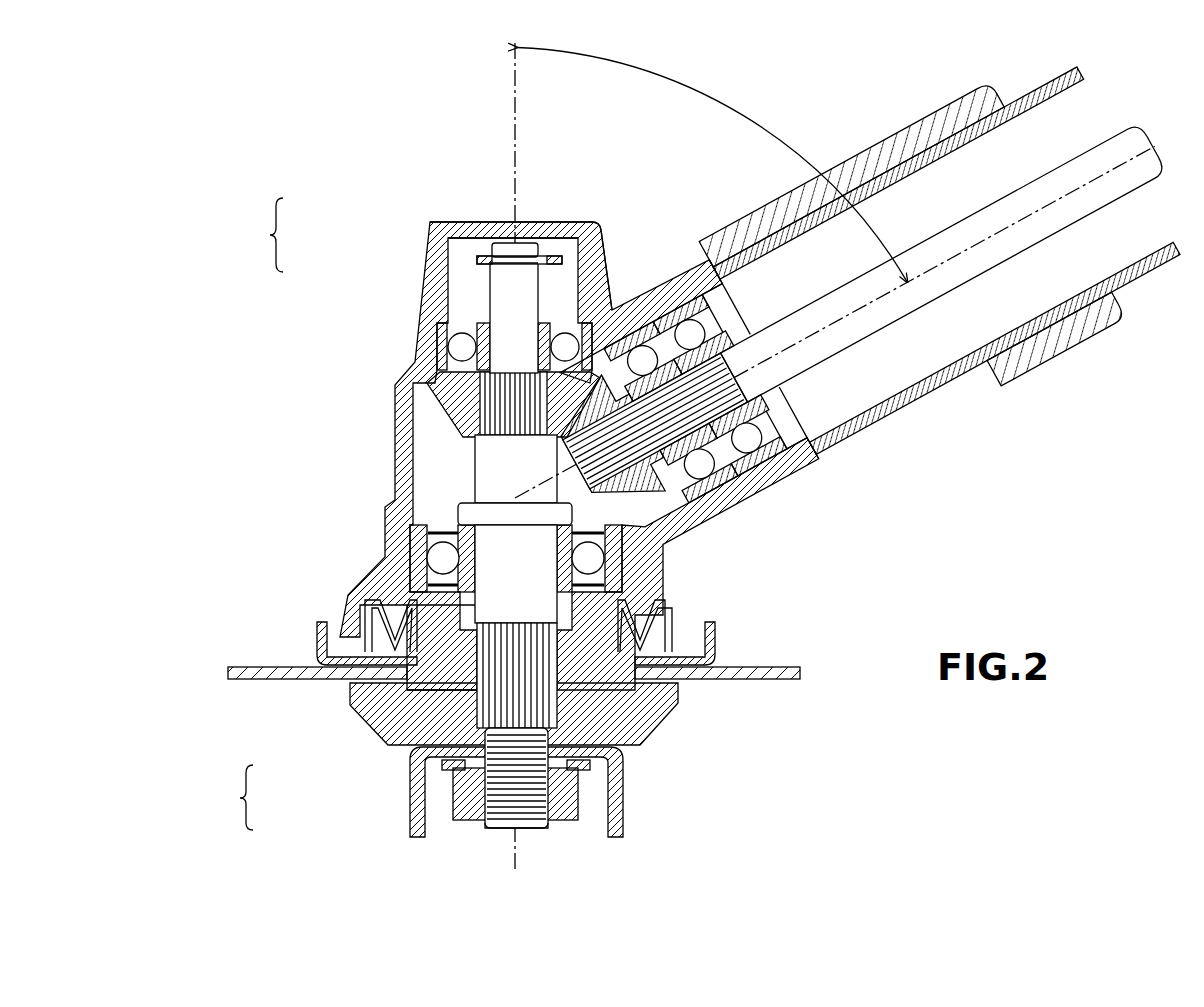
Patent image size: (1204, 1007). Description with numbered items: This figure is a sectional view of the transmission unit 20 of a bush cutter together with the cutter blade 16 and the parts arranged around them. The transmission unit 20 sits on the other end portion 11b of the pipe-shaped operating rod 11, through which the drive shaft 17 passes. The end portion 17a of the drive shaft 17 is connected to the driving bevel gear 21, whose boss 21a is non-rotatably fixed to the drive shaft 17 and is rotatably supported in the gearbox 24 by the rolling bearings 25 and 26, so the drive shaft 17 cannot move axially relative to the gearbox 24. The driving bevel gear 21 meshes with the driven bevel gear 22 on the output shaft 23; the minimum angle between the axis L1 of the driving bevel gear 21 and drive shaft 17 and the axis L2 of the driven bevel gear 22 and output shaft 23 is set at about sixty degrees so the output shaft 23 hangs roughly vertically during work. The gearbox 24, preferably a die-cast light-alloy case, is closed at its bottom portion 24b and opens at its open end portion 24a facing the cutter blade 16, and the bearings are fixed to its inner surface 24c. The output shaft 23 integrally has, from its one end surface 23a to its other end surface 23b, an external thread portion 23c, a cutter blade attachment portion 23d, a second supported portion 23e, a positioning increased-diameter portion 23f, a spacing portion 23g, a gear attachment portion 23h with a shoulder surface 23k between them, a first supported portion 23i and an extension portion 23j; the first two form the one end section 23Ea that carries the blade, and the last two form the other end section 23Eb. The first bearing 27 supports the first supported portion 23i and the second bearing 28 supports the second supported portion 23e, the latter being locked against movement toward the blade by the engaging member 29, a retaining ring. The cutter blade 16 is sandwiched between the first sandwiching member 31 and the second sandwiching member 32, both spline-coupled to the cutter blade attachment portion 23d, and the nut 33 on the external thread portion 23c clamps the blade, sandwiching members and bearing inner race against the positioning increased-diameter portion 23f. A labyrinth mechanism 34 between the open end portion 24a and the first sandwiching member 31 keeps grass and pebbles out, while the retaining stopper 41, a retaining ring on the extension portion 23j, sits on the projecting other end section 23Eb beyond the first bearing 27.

The transmission unit 20 is at (210, 172).
The axis of the driven bevel gear L2 is at (513, 73).
The axis of the driving bevel gear L1 is at (970, 250).
The driven bevel gear 22 is at (433, 403).
The gearbox 24 is at (582, 222).
The open end portion 24a is at (400, 683).
The bottom portion 24b is at (540, 222).
The inner surface of the gearbox 24c is at (440, 705).
The driving bevel gear 21 is at (668, 585).
The boss 21a is at (668, 545).
The labyrinth mechanism 34 is at (377, 622).
The cutter blade 16 is at (738, 680).
The first sandwiching member 31 is at (677, 703).
The second sandwiching member 32 is at (637, 735).
The nut 33 is at (620, 817).
The first bearing 27 is at (453, 338).
The second bearing 28 is at (442, 563).
The engaging member 29 is at (387, 590).
The output shaft 23 is at (542, 300).
The one axial end surface 23a is at (505, 832).
The other axial end surface 23b is at (492, 240).
The external thread portion 23c is at (500, 775).
The cutter blade attachment portion 23d is at (493, 710).
The second supported portion 23e is at (433, 545).
The positioning increased-diameter portion 23f is at (443, 517).
The spacing portion 23g is at (485, 472).
The gear attachment portion 23h is at (480, 420).
The first supported portion 23i is at (497, 288).
The extension portion 23j is at (497, 240).
The shoulder surface 23k is at (477, 448).
The one end section 23Ea is at (212, 797).
The other end section 23Eb is at (243, 235).
The retaining stopper 41 is at (481, 253).
The drive shaft 17 is at (884, 334).
The end portion of the drive shaft 17a is at (757, 375).
The bearing 25 is at (705, 483).
The bearing 26 is at (757, 488).
The operating rod 11 is at (1147, 277).
The other end portion of the operating rod 11b is at (1000, 347).